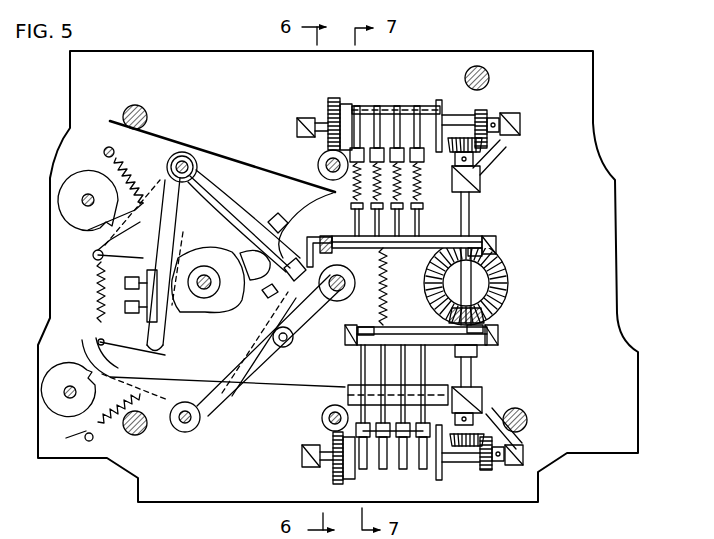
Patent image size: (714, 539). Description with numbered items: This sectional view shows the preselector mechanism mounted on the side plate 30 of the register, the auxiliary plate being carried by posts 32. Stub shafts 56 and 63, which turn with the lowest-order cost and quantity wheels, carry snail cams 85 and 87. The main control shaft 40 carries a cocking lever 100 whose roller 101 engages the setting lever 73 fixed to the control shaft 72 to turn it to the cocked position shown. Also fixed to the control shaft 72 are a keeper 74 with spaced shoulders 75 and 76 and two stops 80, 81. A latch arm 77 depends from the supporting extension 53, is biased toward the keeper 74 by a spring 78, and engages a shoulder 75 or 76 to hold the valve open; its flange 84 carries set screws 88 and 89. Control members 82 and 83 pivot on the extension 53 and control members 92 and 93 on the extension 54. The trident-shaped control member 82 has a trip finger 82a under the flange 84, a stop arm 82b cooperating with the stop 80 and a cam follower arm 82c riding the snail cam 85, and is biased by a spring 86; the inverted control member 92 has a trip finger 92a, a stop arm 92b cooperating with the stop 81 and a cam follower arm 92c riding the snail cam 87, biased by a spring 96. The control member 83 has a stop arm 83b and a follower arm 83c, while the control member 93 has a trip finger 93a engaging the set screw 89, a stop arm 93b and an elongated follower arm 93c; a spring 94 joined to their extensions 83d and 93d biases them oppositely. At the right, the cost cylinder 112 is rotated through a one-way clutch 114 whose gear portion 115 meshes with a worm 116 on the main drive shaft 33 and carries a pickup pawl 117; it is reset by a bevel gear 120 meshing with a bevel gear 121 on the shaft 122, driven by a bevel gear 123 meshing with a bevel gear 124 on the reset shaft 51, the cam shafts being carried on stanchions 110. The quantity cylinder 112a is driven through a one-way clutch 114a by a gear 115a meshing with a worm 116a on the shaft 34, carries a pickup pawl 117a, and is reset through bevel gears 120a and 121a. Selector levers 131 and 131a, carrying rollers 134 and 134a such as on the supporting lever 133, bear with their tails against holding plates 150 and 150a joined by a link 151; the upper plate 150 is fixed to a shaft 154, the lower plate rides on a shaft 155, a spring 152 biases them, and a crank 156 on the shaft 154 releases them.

The side plate 30 is at (70, 60).
The posts 32 is at (143, 110).
The spring 78 is at (117, 120).
The control member 82 is at (210, 171).
The control member 83 is at (234, 162).
The follower arm 83c is at (254, 170).
The extension 53 is at (182, 160).
The latch arm 77 is at (165, 185).
The shoulder 76 is at (158, 312).
The stub shaft 56 is at (88, 199).
The snail cam 85 is at (62, 172).
The spring 86 is at (116, 156).
The trip finger 82a is at (135, 250).
The cam follower arm 82c is at (88, 229).
The extension 83d is at (95, 251).
The spring 94 is at (98, 268).
The extension 93d is at (97, 310).
The set screw 88 is at (125, 282).
The set screw 89 is at (125, 305).
The flange 84 is at (147, 317).
The cam follower arm 92c is at (100, 340).
The snail cam 87 is at (52, 378).
The stub shaft 63 is at (64, 392).
The spring 96 is at (98, 424).
The trip finger 92a is at (150, 365).
The trip finger 93a is at (155, 345).
The extension 54 is at (180, 428).
The control member 92 is at (205, 426).
The control member 93 is at (242, 423).
The stop arm 92b is at (250, 347).
The follower arm 93c is at (304, 386).
The stop arm 93b is at (290, 298).
The shoulder 75 is at (188, 262).
The control shaft 72 is at (205, 290).
The keeper 74 is at (230, 302).
The stop 81 is at (262, 292).
The stop arm 82b is at (250, 212).
The setting lever 73 is at (270, 240).
The stop 80 is at (272, 230).
The stop arm 83b is at (280, 250).
The main control shaft 40 is at (345, 276).
The cocking lever 100 is at (305, 330).
The roller 101 is at (295, 340).
The stanchions 110 is at (296, 118).
The gear portion 115 is at (328, 102).
The one-way clutch 114 is at (345, 104).
The cylinder 112 is at (372, 106).
The rollers 134 is at (419, 125).
The selector levers 131 is at (420, 223).
The supporting lever 133 is at (438, 100).
The pickup pawl 117 is at (445, 116).
The bevel gear 120 is at (484, 110).
The bevel gear 121 is at (500, 150).
The shaft 122 is at (480, 190).
The holding plate 150 is at (474, 236).
The crank 156 is at (318, 236).
The bevel gear 124 is at (497, 251).
The reset shaft 51 is at (505, 272).
The bevel gear 123 is at (487, 323).
The shaft 154 is at (386, 256).
The spring 152 is at (386, 284).
The shaft 155 is at (386, 315).
The link 151 is at (380, 332).
The holding plate 150a is at (478, 352).
The selector levers 131a is at (472, 376).
The bevel gear 121a is at (493, 416).
The bevel gear 120a is at (524, 452).
The pickup pawl 117a is at (460, 472).
The rollers 134a is at (407, 470).
The cylinder 112a is at (396, 476).
The worm 116 is at (321, 160).
The main drive shaft 33 is at (318, 166).
The worm 116a is at (322, 420).
The shaft 34 is at (326, 425).
The gear 115a is at (302, 457).
The one-way clutch 114a is at (350, 477).